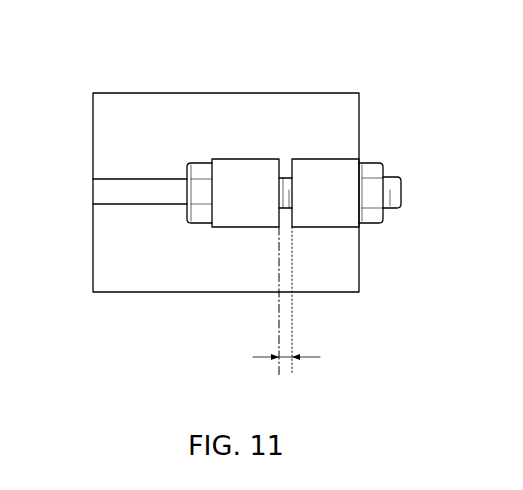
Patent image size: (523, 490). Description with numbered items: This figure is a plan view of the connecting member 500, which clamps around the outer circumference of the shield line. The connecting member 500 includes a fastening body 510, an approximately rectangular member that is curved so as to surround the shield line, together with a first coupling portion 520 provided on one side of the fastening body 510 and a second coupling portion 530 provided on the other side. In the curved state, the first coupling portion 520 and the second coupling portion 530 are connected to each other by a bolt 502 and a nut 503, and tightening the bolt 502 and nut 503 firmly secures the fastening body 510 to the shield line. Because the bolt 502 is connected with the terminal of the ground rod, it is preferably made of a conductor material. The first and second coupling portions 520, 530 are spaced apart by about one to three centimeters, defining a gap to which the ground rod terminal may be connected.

The connecting member 500 is at (83, 32).
The bolt 502 is at (198, 170).
The nut 503 is at (375, 168).
The fastening body 510 is at (282, 110).
The first coupling portion 520 is at (326, 170).
The second coupling portion 530 is at (243, 170).